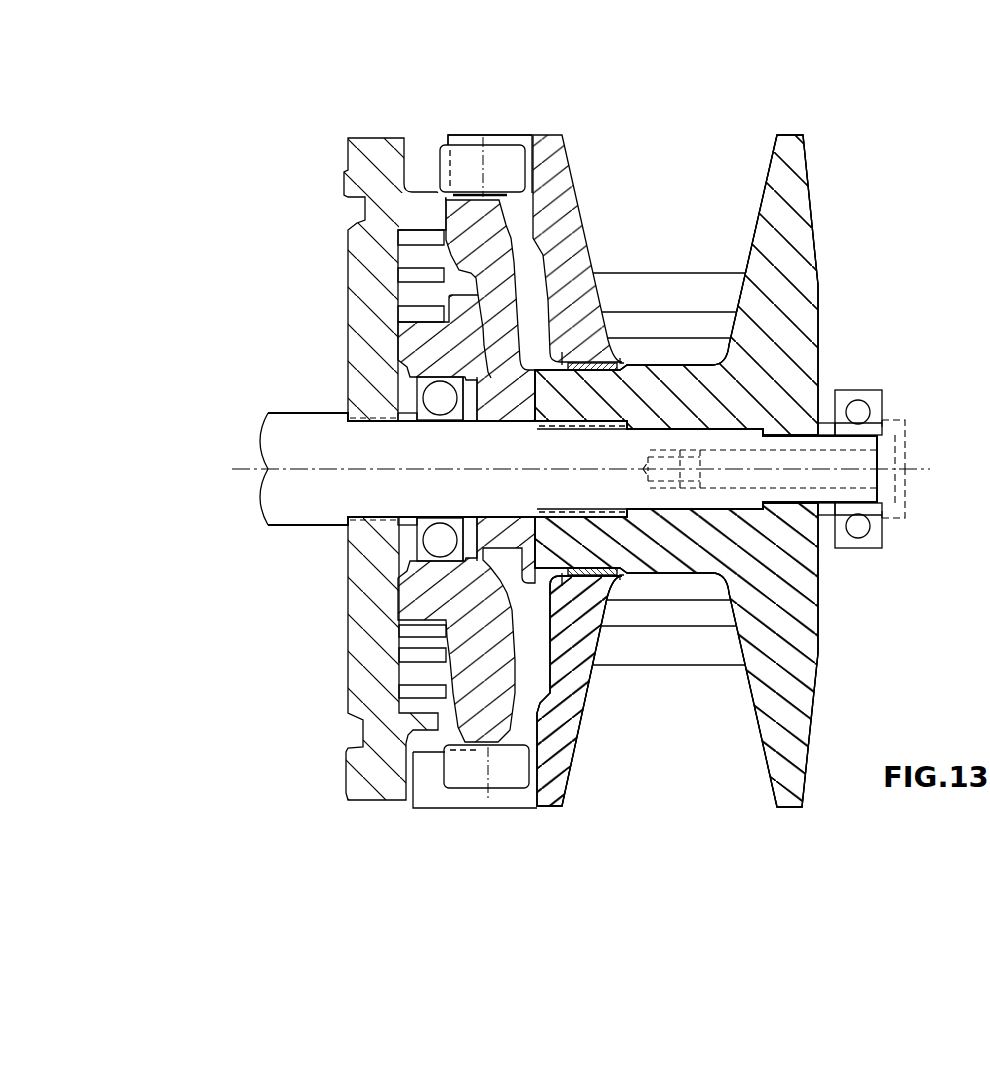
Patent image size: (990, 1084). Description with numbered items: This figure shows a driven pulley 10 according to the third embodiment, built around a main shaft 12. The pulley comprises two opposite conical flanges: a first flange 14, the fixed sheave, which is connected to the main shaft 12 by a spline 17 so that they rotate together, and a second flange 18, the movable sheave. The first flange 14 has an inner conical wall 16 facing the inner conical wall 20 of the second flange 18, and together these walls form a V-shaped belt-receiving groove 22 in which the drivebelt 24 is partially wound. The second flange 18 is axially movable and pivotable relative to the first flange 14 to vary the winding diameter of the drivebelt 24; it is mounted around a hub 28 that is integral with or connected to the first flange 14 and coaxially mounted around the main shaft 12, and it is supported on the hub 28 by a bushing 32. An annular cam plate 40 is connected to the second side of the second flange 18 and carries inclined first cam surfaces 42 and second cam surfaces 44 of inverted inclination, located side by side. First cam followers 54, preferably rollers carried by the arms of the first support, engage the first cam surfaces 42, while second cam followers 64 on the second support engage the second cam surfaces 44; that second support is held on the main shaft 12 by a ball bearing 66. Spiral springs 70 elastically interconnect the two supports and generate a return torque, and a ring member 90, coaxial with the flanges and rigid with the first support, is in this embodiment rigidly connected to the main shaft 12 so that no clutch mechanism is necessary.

The driven pulley 10 is at (205, 152).
The main shaft 12 is at (277, 503).
The first flange 14 is at (790, 808).
The inner conical wall 16 is at (772, 778).
The spline 17 is at (690, 398).
The second flange 18 is at (545, 808).
The inner conical wall 20 is at (567, 770).
The belt-receiving groove 22 is at (688, 199).
The drivebelt 24 is at (665, 297).
The hub 28 is at (727, 372).
The bushing 32 is at (620, 362).
The annular cam plate 40 is at (460, 135).
The first cam surface 42 is at (498, 135).
The second cam surface 44 is at (433, 790).
The first cam followers 54 is at (505, 155).
The second cam followers 64 is at (473, 772).
The ball bearing 66 is at (440, 542).
The spiral springs 70 is at (418, 315).
The ring member 90 is at (370, 253).